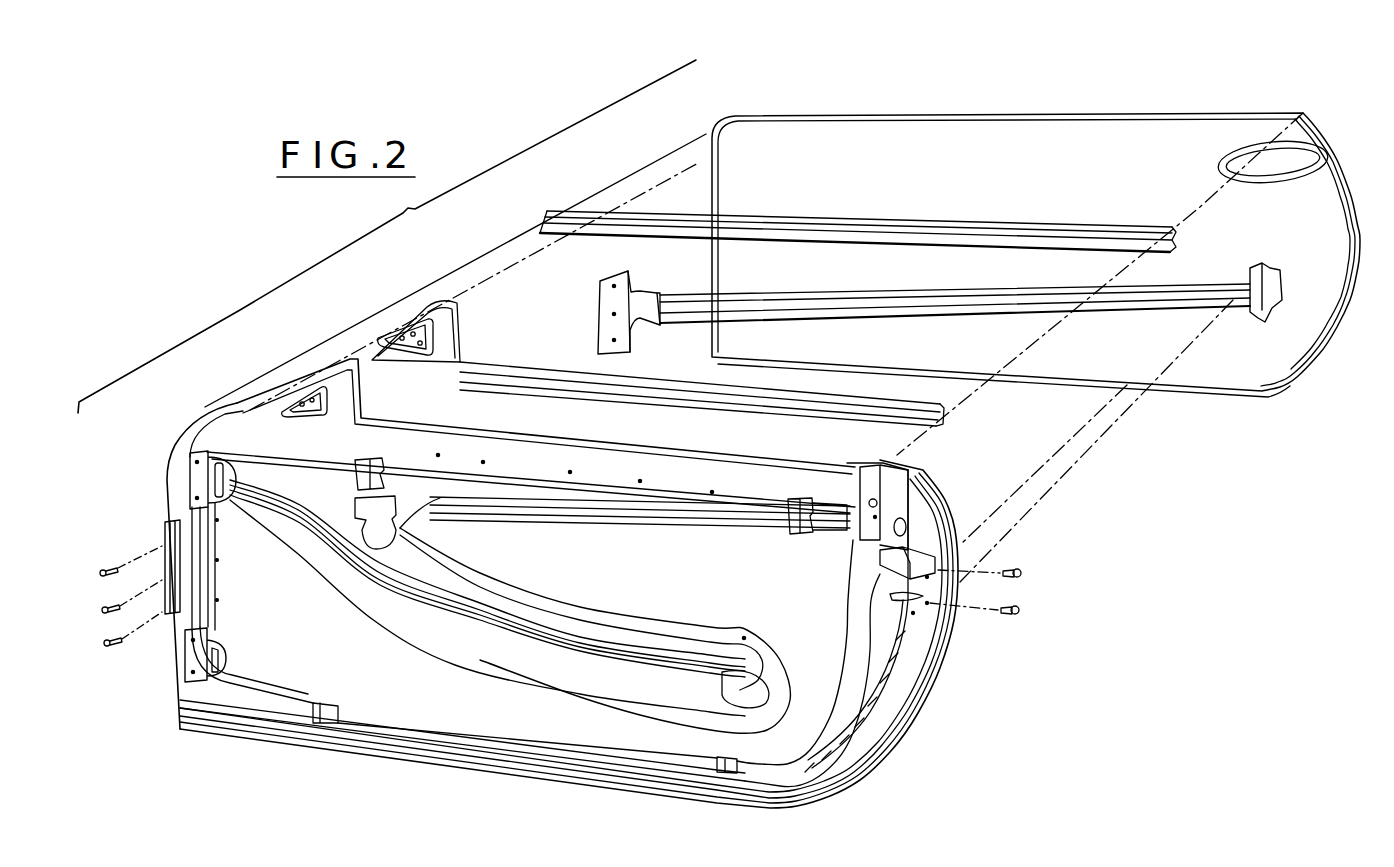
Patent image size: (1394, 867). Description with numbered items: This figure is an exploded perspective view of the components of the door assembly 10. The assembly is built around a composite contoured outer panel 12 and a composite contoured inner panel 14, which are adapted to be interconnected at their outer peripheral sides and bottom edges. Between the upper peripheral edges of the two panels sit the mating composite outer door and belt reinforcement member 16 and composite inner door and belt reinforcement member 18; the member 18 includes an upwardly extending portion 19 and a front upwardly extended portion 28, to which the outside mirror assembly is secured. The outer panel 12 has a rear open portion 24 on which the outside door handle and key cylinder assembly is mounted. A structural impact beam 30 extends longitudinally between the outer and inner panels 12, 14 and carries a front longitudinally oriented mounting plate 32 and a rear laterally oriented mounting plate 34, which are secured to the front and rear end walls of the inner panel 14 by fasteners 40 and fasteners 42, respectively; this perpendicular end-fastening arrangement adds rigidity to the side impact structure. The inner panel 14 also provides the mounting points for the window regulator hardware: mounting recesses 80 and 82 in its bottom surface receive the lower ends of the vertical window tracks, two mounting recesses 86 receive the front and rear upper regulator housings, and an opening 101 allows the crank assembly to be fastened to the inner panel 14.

The door assembly 10 is at (785, 72).
The composite contoured outer panel 12 is at (845, 130).
The composite contoured inner panel 14 is at (400, 693).
The composite outer door and belt reinforcement member 16 is at (918, 216).
The composite inner door and belt reinforcement member 18 is at (762, 405).
The upwardly extending portion 19 is at (428, 310).
The rear open portion 24 is at (1303, 143).
The front upwardly extended portion 28 is at (302, 393).
The structural impact beam 30 is at (980, 313).
The front longitudinally oriented mounting plate 32 is at (598, 278).
The rear laterally oriented mounting plate 34 is at (1258, 322).
The fasteners 40 is at (97, 645).
The fasteners 42 is at (1022, 607).
The mounting recess 80 is at (325, 705).
The mounting recess 82 is at (721, 773).
The mounting recesses 86 is at (353, 472).
The opening 101 is at (403, 527).